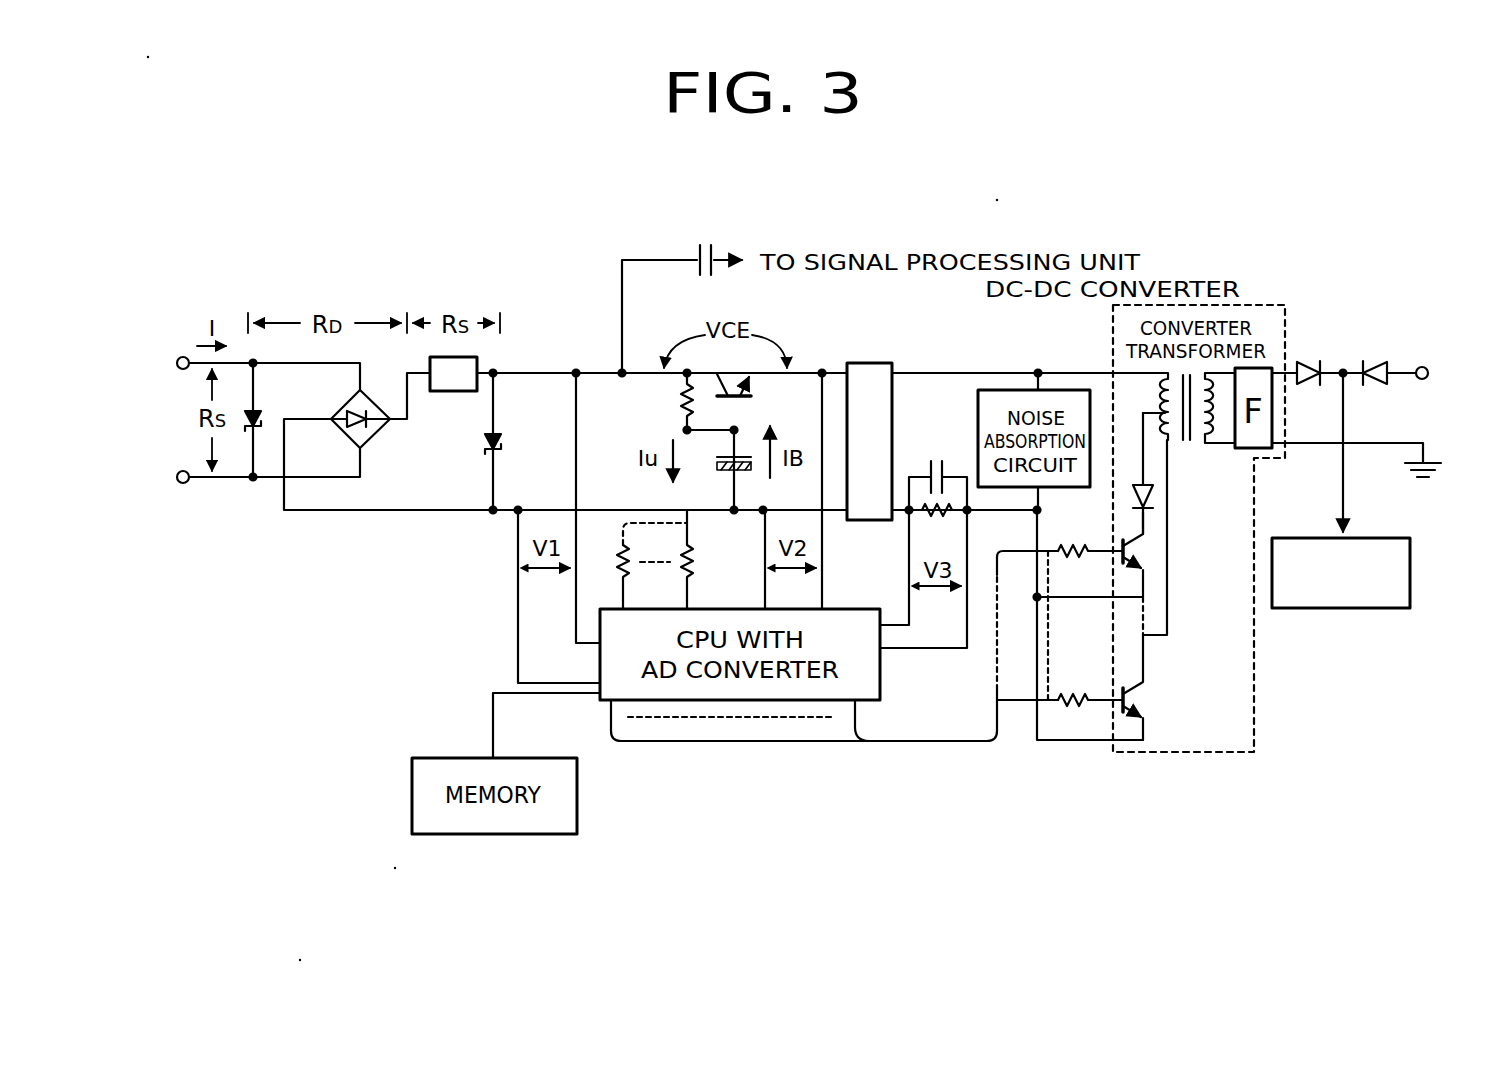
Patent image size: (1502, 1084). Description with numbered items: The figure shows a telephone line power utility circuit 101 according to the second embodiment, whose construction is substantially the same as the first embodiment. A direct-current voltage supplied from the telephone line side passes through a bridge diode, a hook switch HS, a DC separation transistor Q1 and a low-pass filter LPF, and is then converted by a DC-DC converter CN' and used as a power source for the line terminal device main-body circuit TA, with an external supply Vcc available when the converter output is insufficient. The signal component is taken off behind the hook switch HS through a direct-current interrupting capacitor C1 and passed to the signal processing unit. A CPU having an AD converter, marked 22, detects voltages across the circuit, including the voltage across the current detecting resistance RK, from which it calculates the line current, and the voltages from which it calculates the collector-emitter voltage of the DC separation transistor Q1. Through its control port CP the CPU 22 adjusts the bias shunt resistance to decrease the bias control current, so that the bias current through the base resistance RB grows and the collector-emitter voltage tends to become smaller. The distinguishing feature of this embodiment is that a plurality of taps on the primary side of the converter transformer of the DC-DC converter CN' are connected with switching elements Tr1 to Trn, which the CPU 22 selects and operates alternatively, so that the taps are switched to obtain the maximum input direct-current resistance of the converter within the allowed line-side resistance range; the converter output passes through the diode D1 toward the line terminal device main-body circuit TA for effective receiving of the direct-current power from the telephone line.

The CPU having an AD converter 22 is at (883, 686).
The telephone line power utility circuit 101 is at (1379, 355).
The DC separation transistor Q1 is at (734, 370).
The direct-current interrupting capacitor C1 is at (682, 309).
The diode D1 is at (1312, 389).
The switching element Tr1 is at (1100, 553).
The switching element Trn is at (1122, 687).
The line terminal device main-body circuit TA is at (1352, 608).
The DC-DC converter CN' is at (1219, 528).
The hook switch HS is at (453, 374).
The base resistor RB is at (666, 401).
The current detecting resistance RK is at (938, 527).
The control port CP is at (655, 559).
The low-pass filter LPF is at (869, 441).